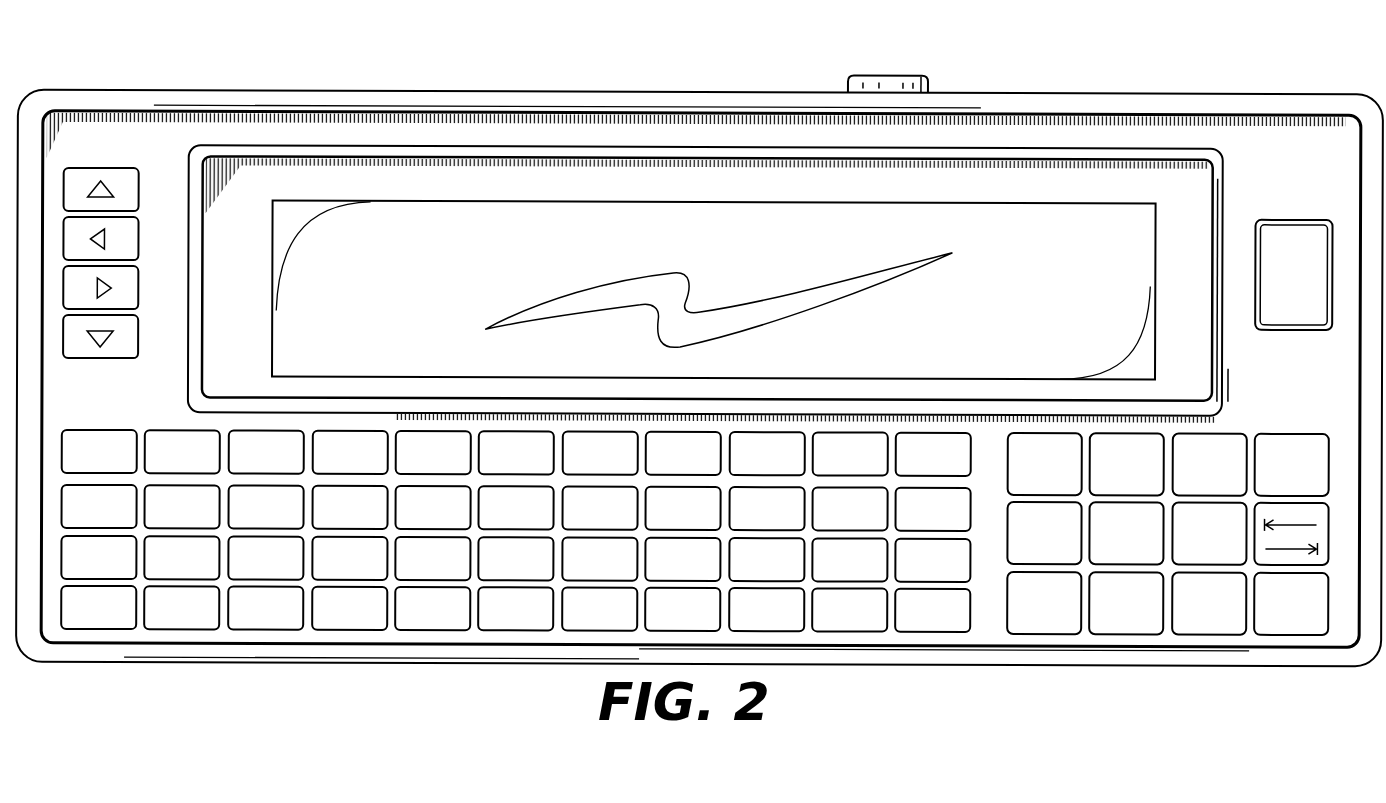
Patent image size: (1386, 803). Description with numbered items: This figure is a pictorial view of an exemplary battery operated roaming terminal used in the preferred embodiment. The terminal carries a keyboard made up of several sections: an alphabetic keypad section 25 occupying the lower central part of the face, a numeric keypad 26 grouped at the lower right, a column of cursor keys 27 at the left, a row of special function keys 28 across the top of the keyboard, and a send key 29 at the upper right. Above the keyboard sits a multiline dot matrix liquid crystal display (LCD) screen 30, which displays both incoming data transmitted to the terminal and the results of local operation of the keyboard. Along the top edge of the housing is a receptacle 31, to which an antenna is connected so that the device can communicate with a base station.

The alphabetic keypad section 25 is at (596, 646).
The numeric keypad 26 is at (1286, 420).
The cursor keys 27 is at (100, 150).
The special function keys 28 is at (164, 411).
The send key 29 is at (1333, 243).
The multiline dot matrix liquid crystal display (LCD) screen 30 is at (992, 280).
The receptacle 31 is at (882, 74).